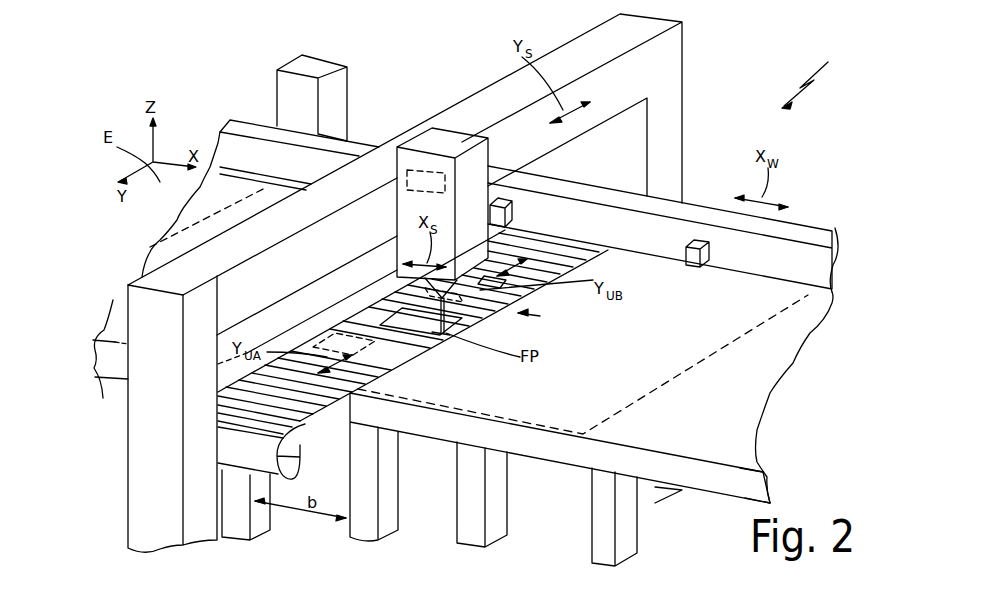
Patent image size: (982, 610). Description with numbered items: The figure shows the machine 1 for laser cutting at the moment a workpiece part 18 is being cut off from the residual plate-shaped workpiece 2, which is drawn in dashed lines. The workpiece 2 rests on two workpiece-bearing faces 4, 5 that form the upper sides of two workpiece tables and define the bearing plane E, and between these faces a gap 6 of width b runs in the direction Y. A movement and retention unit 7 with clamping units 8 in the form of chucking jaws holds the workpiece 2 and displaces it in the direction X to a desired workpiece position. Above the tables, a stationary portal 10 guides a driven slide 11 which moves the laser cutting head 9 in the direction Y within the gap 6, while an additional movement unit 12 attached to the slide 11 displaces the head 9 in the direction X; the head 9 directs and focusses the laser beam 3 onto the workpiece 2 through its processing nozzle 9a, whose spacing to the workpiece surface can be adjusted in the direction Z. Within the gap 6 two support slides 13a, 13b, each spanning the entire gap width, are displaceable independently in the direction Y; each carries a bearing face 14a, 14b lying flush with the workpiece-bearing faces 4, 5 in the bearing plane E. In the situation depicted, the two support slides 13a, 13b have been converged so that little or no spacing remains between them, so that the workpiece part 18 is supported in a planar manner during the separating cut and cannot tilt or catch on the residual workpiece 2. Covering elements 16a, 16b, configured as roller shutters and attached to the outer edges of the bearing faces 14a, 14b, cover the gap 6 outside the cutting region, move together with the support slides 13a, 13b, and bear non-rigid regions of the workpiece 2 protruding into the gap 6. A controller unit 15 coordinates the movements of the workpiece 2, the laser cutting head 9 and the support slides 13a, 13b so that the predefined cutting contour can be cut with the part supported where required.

The machine 1 is at (812, 77).
The plate-shaped workpiece 2 is at (547, 428).
The laser beam 3 is at (425, 288).
The workpiece-bearing face 4 is at (112, 328).
The workpiece-bearing face 5 is at (727, 453).
The gap 6 is at (334, 471).
The movement and retention unit 7 is at (812, 270).
The clamping unit 8 is at (708, 257).
The laser cutting head 9 is at (428, 282).
The processing nozzle 9a is at (485, 292).
The stationary portal 10 is at (150, 527).
The driven slide 11 is at (422, 160).
The additional movement unit 12 is at (408, 175).
The support slide 13a is at (405, 358).
The support slide 13b is at (540, 316).
The bearing face 14a is at (352, 340).
The bearing face 14b is at (414, 307).
The controller unit 15 is at (293, 100).
The covering element 16a is at (220, 405).
The covering element 16b is at (550, 257).
The workpiece part 18 is at (444, 335).